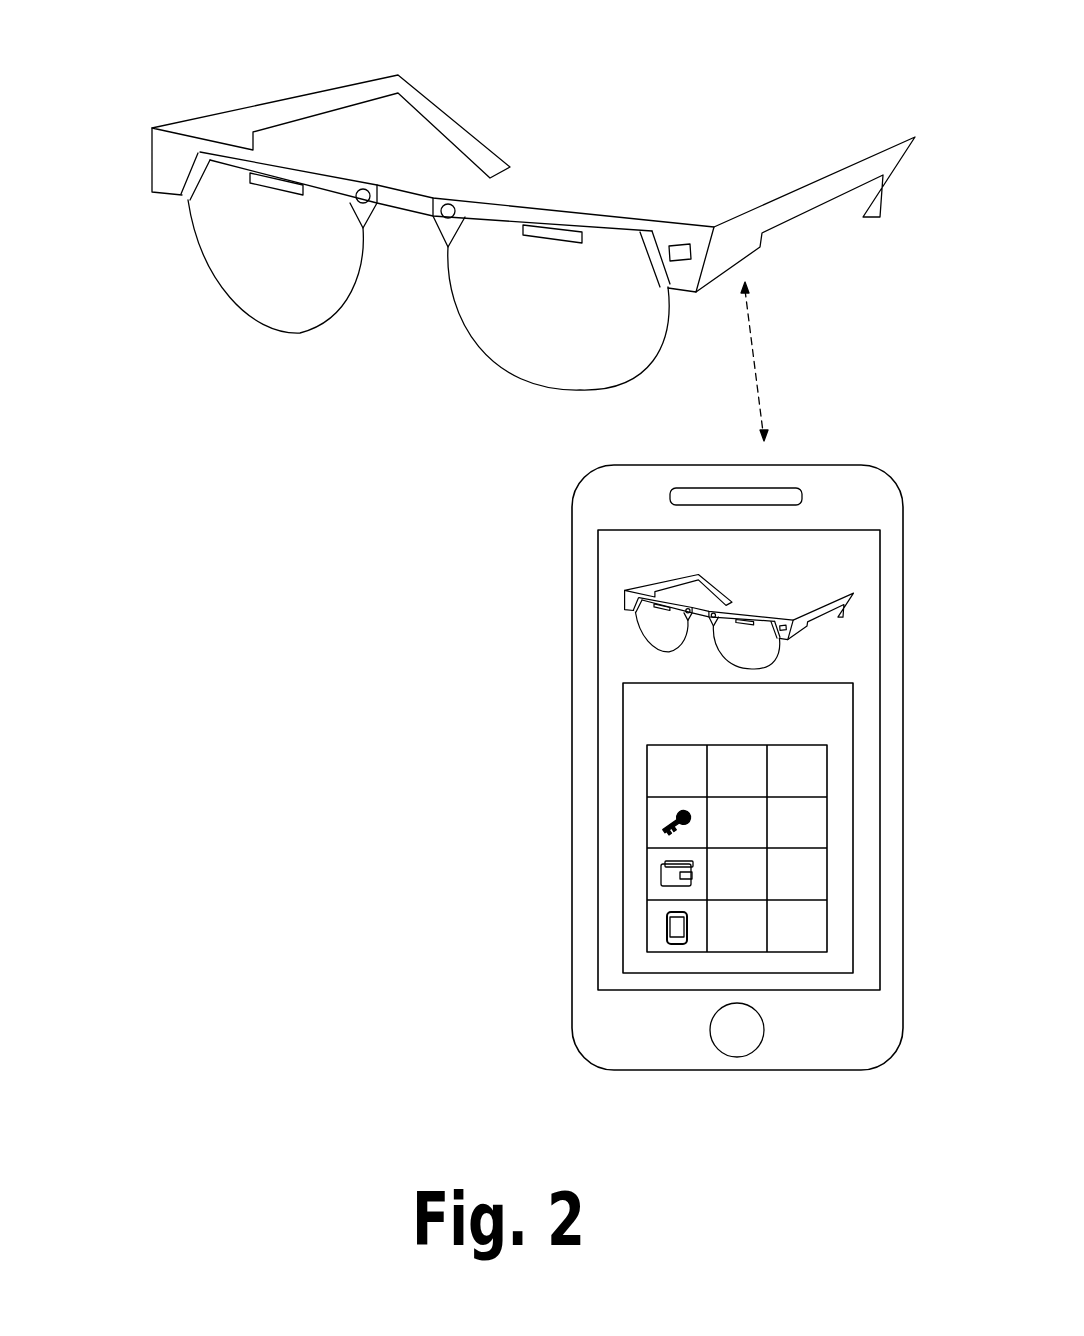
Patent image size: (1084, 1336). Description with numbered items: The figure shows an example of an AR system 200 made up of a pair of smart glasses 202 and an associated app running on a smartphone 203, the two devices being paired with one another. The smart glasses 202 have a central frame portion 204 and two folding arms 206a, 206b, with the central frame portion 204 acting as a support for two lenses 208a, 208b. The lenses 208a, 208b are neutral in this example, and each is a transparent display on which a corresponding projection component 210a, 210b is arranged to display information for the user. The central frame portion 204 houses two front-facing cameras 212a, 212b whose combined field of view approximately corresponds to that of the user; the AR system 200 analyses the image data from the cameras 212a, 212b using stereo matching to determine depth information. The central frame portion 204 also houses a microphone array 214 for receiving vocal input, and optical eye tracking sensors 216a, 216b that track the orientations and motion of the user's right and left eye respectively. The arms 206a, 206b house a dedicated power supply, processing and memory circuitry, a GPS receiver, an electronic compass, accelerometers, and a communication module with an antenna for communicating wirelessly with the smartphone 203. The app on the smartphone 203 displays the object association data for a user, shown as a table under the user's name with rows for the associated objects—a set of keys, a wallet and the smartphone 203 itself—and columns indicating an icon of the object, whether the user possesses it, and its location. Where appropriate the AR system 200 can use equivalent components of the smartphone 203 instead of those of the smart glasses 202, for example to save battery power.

The AR system 200 is at (280, 655).
The smart glasses 202 is at (520, 97).
The smartphone 203 is at (570, 607).
The central frame portion 204 is at (520, 205).
The folding arm 206a is at (193, 118).
The folding arm 206b is at (742, 243).
The lens 208a is at (247, 320).
The lens 208b is at (492, 360).
The projection component 210a is at (277, 192).
The projection component 210b is at (557, 240).
The front-facing camera 212a is at (373, 203).
The front-facing camera 212b is at (430, 197).
The microphone array 214 is at (673, 245).
The optical eye tracking sensor 216a is at (178, 198).
The optical eye tracking sensor 216b is at (653, 283).